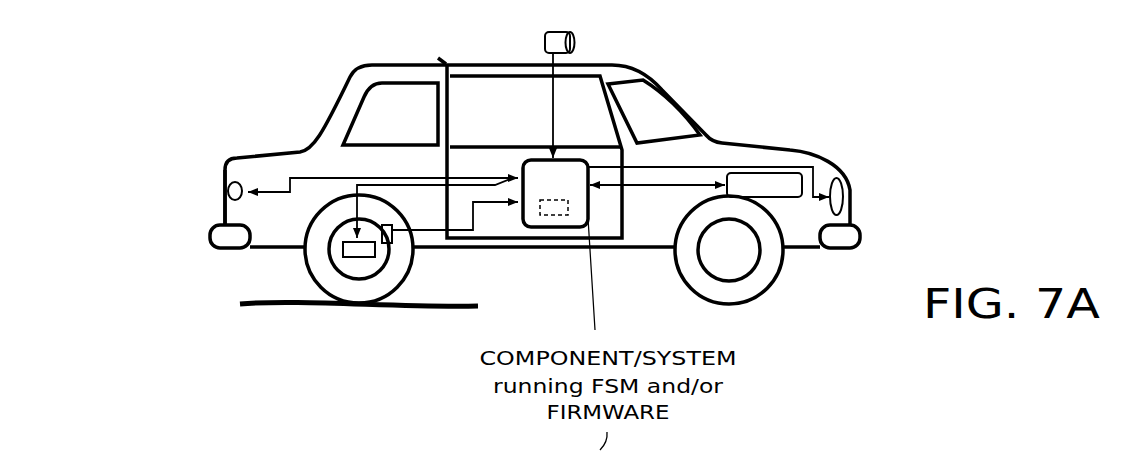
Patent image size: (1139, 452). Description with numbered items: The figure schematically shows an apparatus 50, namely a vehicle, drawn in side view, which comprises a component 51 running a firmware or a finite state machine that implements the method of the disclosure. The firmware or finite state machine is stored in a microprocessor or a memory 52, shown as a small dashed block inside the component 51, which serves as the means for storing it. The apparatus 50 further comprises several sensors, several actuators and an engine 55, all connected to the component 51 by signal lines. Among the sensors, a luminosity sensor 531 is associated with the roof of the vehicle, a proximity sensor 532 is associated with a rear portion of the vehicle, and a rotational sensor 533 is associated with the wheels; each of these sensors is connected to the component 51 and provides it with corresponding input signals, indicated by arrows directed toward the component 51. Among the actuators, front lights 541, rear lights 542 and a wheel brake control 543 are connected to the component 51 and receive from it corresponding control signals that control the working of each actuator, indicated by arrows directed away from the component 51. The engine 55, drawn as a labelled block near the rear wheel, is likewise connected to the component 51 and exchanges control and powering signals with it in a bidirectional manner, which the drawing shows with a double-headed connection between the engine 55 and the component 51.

The apparatus 50 is at (947, 133).
The component 51 is at (555, 193).
The memory 52 is at (557, 208).
The luminosity sensor 531 is at (569, 42).
The proximity sensor 532 is at (223, 178).
The rotational sensor 533 is at (393, 244).
The front lights 541 is at (847, 180).
The rear lights 542 is at (226, 193).
The wheel brake control 543 is at (340, 249).
The engine 55 is at (785, 205).